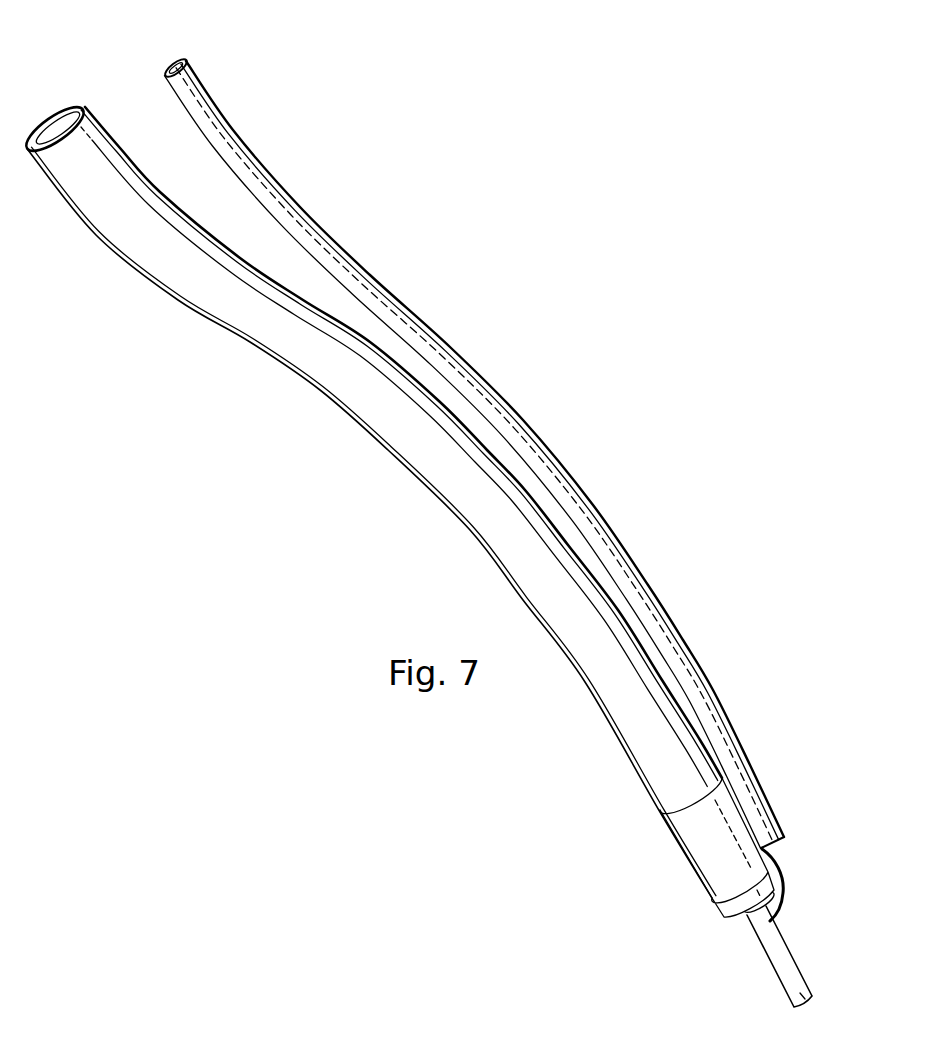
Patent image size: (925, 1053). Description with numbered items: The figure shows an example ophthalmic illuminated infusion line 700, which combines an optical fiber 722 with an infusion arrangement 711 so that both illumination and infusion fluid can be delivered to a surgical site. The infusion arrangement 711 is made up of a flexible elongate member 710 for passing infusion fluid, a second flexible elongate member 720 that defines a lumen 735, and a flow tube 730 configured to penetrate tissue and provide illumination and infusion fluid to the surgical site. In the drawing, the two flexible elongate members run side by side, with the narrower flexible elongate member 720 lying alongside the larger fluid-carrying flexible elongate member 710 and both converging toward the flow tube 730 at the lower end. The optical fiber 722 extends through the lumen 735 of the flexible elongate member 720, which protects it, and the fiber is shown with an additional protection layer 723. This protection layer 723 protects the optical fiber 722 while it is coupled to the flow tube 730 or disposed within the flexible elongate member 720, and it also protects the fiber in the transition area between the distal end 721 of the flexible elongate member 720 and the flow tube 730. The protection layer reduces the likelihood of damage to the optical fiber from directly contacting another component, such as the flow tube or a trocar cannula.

The illuminated infusion line 700 is at (433, 509).
The flexible elongate member 710 is at (368, 434).
The infusion arrangement 711 is at (669, 860).
The flexible elongate member 720 is at (493, 429).
The distal end 721 is at (782, 832).
The optical fiber 722 is at (640, 589).
The protection layer 723 is at (784, 878).
The flow tube 730 is at (770, 966).
The lumen 735 is at (175, 61).